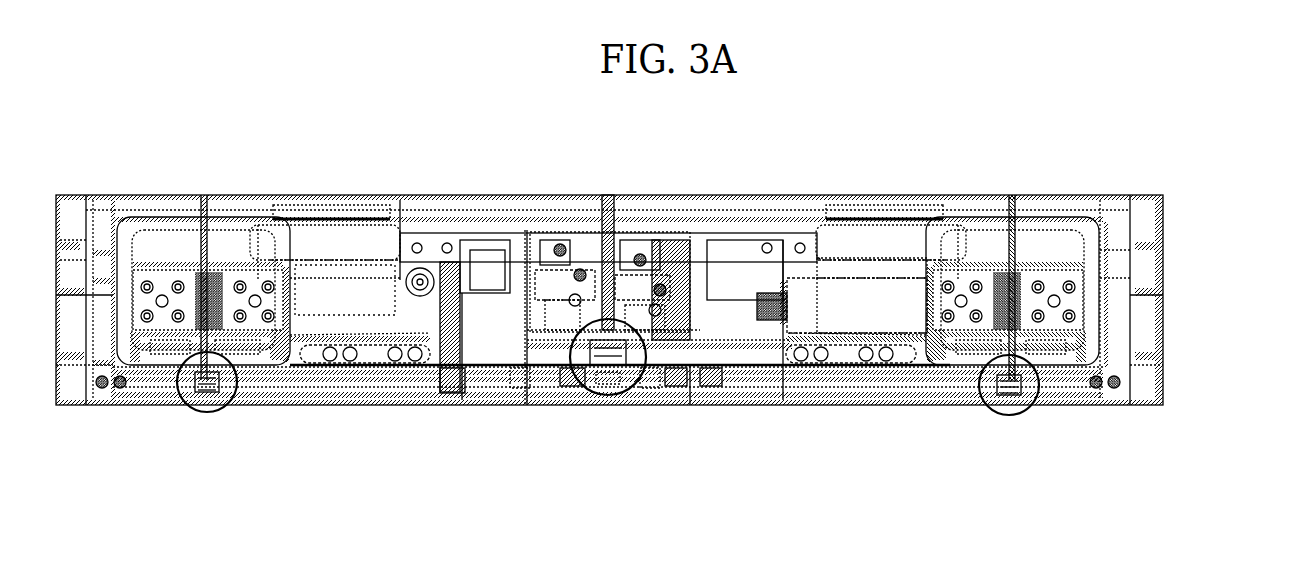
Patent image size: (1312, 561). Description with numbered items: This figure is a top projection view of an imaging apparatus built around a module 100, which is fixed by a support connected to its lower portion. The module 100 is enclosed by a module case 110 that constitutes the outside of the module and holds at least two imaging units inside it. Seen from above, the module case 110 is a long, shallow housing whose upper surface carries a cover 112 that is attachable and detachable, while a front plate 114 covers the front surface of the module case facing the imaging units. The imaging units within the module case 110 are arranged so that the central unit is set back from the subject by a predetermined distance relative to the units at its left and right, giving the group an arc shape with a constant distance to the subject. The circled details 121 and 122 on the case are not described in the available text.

The module 100 is at (1233, 219).
The module case 110 is at (1163, 325).
The cover 112 is at (990, 405).
The front plate 114 is at (795, 400).
The fastening portion 121 is at (215, 410).
The connecting member 122 is at (690, 400).